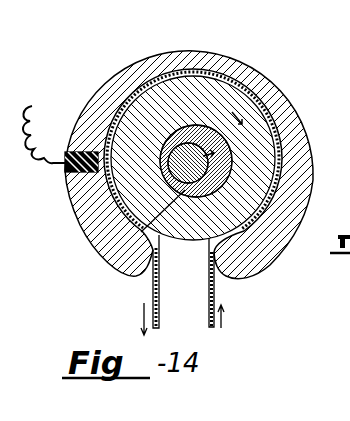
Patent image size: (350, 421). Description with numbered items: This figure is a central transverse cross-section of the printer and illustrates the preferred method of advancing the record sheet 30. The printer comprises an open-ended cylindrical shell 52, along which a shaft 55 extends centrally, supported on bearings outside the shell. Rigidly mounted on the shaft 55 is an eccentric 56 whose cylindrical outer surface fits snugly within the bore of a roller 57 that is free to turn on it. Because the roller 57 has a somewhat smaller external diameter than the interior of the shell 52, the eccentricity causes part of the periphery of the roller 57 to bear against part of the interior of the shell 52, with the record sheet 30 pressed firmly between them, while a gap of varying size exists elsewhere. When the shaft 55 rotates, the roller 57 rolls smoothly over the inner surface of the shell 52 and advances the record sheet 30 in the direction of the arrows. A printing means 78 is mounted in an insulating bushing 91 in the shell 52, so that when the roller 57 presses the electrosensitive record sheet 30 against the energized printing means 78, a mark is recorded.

The record sheet 30 is at (207, 282).
The cylindrical shell 52 is at (265, 80).
The shaft 55 is at (202, 179).
The eccentric 56 is at (124, 254).
The roller 57 is at (163, 95).
The printing means 78 is at (54, 168).
The insulating bushing 91 is at (80, 150).